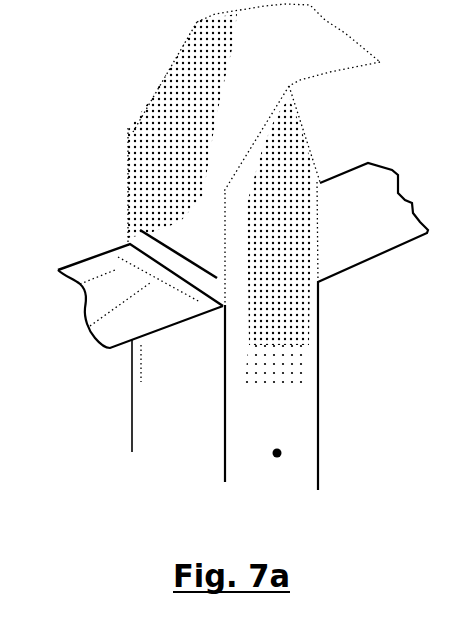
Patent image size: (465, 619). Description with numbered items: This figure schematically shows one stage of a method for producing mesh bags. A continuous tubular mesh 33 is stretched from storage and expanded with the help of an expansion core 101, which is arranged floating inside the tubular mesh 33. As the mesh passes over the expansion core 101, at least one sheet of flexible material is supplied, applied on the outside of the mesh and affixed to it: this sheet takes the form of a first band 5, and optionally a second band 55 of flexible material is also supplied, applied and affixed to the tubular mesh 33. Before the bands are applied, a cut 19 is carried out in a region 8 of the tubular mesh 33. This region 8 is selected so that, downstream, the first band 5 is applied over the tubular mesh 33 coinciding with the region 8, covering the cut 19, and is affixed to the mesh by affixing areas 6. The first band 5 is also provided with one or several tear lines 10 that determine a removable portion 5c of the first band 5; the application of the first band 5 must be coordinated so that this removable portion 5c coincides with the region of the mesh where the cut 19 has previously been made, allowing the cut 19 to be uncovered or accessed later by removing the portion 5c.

The tubular mesh 33 is at (313, 48).
The region of tubular mesh 8 is at (109, 191).
The cut 19 is at (136, 236).
The tear line 10 is at (80, 284).
The removable portion 5c is at (90, 326).
The first band 5 is at (158, 391).
The affixing areas 6 is at (213, 427).
The second band 55 is at (315, 398).
The expansion core 101 is at (281, 453).